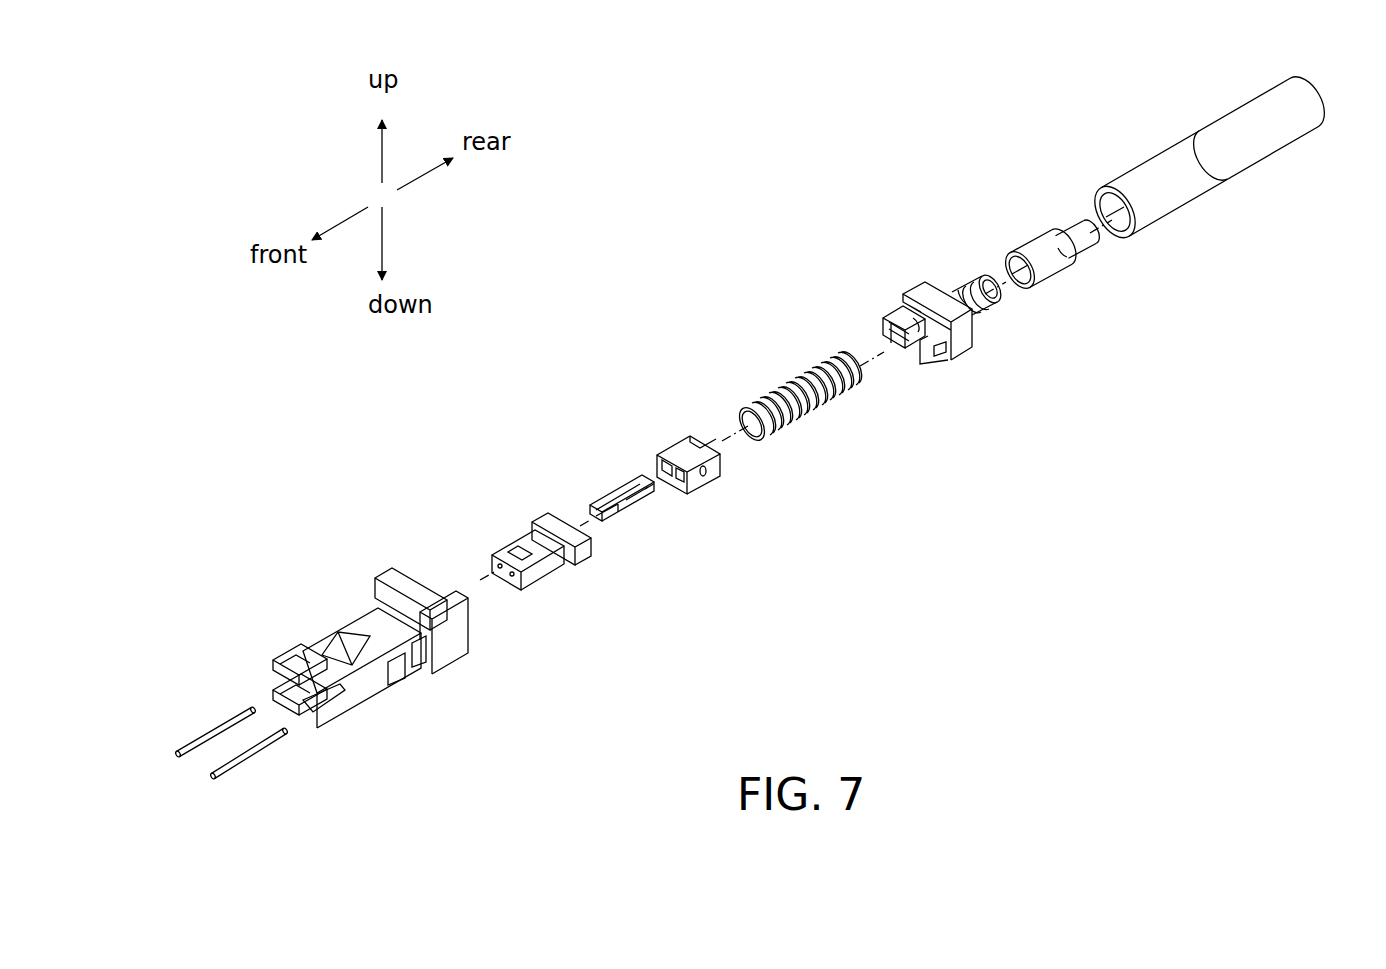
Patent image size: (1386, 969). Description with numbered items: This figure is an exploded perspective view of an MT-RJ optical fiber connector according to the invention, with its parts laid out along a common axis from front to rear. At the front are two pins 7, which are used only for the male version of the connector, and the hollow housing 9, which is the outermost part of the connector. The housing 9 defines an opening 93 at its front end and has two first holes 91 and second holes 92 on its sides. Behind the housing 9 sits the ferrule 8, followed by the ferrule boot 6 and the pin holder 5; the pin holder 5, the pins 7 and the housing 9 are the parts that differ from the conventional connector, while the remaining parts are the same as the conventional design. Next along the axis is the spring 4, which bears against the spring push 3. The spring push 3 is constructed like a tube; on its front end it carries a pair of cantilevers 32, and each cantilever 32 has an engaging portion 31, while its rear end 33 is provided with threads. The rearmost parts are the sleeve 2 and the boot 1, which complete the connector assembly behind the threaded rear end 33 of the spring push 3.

The boot 1 is at (1287, 147).
The sleeve 2 is at (1085, 258).
The spring push 3 is at (959, 325).
The engaging portion 31 is at (932, 365).
The cantilever 32 is at (893, 312).
The rear end 33 is at (964, 286).
The spring 4 is at (786, 430).
The pin holder 5 is at (710, 476).
The ferrule boot 6 is at (616, 490).
The ferrule 8 is at (512, 538).
The housing 9 is at (405, 670).
The first holes 91 is at (428, 658).
The second holes 92 is at (401, 670).
The opening 93 is at (274, 680).
The pins 7 is at (198, 735).